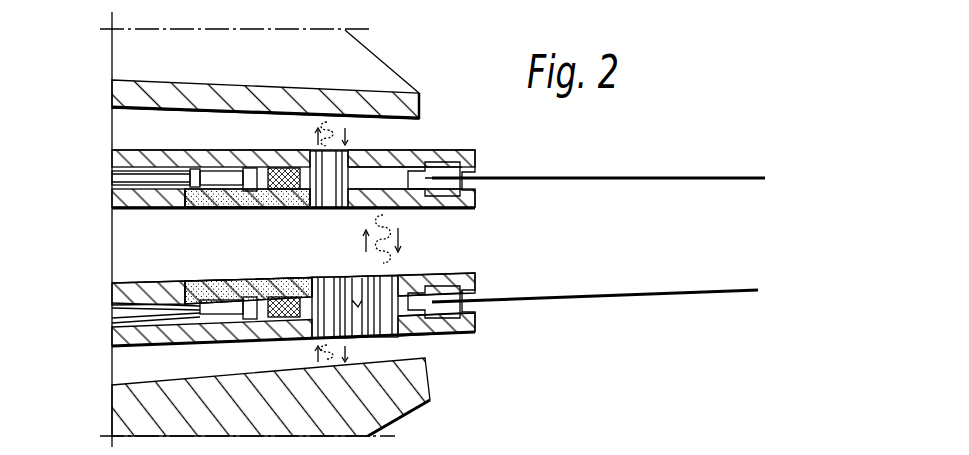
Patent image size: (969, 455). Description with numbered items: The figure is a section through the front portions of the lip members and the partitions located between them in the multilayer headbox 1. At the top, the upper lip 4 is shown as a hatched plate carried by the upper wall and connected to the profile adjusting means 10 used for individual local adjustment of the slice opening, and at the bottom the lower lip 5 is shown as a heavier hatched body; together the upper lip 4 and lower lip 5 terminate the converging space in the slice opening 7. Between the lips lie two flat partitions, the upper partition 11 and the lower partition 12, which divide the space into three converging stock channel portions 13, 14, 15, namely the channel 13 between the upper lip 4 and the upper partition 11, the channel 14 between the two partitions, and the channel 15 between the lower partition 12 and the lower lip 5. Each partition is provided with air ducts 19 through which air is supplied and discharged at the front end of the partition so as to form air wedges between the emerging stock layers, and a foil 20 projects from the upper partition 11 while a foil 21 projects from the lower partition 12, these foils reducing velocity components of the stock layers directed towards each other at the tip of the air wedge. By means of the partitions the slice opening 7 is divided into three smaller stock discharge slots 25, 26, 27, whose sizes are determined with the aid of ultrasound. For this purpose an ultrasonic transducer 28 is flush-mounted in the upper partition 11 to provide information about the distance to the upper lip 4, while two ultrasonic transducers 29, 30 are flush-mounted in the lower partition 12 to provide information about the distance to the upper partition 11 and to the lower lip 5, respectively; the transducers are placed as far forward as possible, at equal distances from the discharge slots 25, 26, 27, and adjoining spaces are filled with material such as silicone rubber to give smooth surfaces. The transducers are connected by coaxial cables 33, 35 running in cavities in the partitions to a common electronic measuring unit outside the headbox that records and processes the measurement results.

The multilayer headbox 1 is at (395, 408).
The upper lip 4 is at (421, 103).
The lower lip 5 is at (430, 378).
The slice opening 7 is at (413, 131).
The profile adjusting means 10 is at (340, 60).
The upper partition 11 is at (476, 157).
The lower partition 12 is at (478, 322).
The stock channel portion 13 is at (122, 130).
The stock channel portion 14 is at (122, 250).
The stock channel portion 15 is at (122, 367).
The air duct 19 is at (400, 191).
The foil 20 is at (636, 177).
The foil 21 is at (636, 290).
The stock discharge slot 25 is at (415, 141).
The stock discharge slot 26 is at (468, 241).
The stock discharge slot 27 is at (423, 346).
The ultrasonic transducer 28 is at (330, 209).
The ultrasonic transducer 29 is at (376, 275).
The ultrasonic transducer 30 is at (320, 278).
The coaxial cable 33 is at (145, 187).
The coaxial cable 35 is at (140, 297).